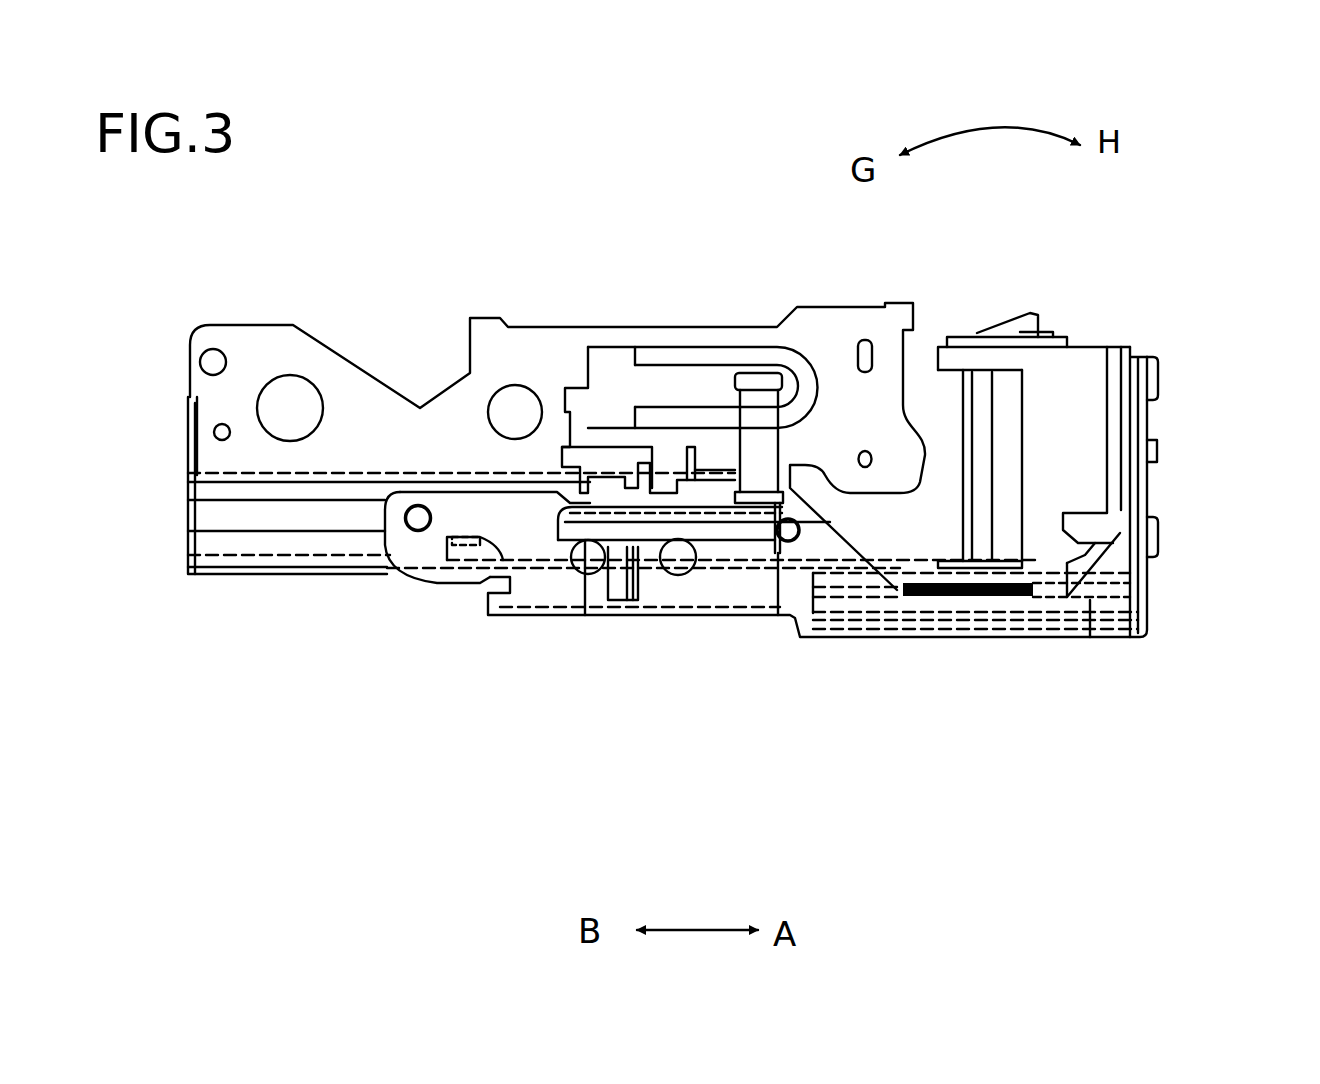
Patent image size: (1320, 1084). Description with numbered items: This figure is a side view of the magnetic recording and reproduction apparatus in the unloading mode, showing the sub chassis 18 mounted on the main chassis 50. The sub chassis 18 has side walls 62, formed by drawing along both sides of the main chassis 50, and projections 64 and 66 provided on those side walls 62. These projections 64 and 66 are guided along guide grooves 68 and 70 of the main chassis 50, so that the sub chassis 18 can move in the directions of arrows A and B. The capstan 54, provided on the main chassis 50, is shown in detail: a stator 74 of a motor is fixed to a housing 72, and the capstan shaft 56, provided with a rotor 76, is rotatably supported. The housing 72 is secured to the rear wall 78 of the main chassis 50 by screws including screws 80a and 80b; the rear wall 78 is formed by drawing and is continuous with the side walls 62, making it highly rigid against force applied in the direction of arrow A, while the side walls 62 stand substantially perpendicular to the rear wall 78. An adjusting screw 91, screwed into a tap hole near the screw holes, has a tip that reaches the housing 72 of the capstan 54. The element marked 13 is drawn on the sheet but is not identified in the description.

The sub chassis 18 is at (253, 342).
The capstan 54 is at (1191, 220).
The housing 72 is at (1078, 367).
The screw 80a is at (1157, 373).
The rear wall 78 is at (1148, 425).
The adjusting screw 91 is at (1157, 457).
The side wall 13 is at (1148, 452).
The screw 80b is at (1157, 543).
The capstan shaft 56 is at (967, 497).
The guide groove 68 is at (258, 520).
The projection 64 is at (410, 520).
The guide groove 70 is at (653, 530).
The side walls 62 is at (723, 590).
The projection 66 is at (778, 540).
The main chassis 50 is at (880, 637).
The stator 74 is at (1027, 597).
The rotor 76 is at (1090, 613).